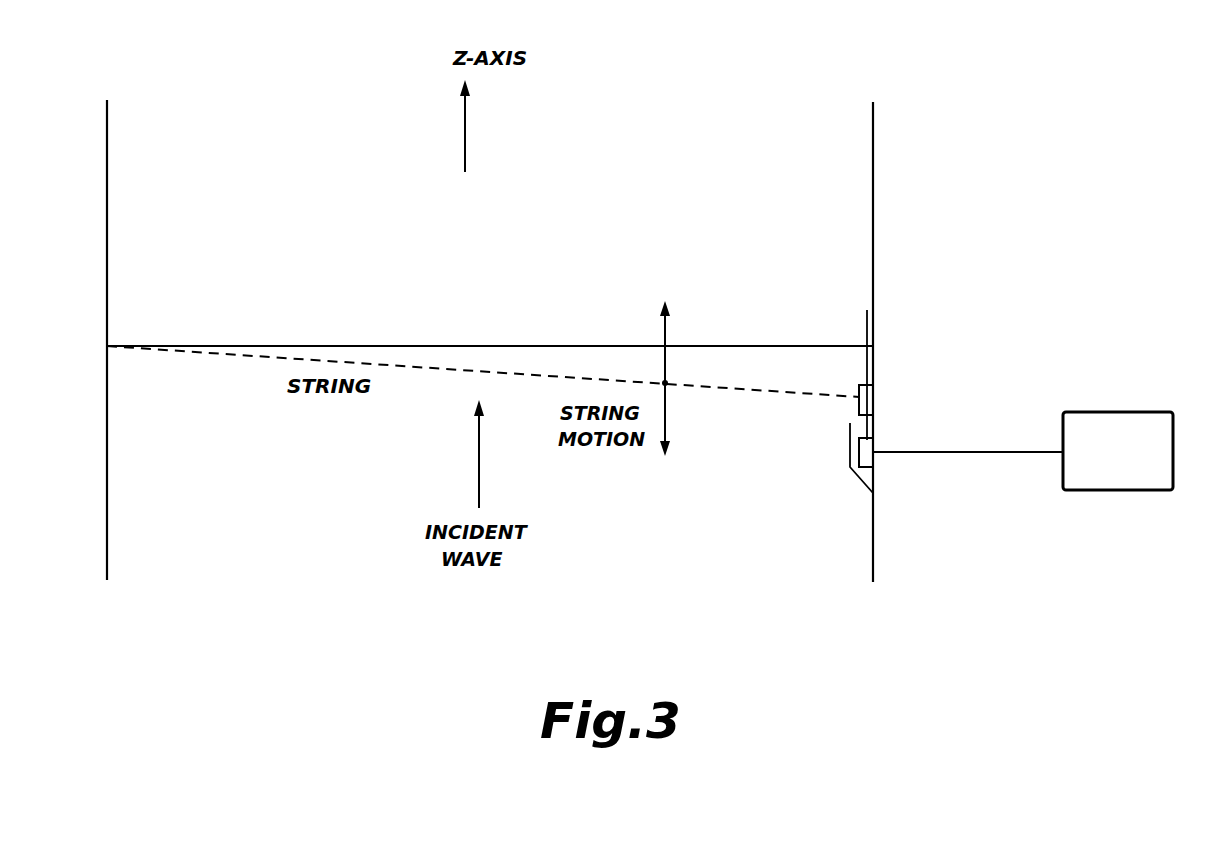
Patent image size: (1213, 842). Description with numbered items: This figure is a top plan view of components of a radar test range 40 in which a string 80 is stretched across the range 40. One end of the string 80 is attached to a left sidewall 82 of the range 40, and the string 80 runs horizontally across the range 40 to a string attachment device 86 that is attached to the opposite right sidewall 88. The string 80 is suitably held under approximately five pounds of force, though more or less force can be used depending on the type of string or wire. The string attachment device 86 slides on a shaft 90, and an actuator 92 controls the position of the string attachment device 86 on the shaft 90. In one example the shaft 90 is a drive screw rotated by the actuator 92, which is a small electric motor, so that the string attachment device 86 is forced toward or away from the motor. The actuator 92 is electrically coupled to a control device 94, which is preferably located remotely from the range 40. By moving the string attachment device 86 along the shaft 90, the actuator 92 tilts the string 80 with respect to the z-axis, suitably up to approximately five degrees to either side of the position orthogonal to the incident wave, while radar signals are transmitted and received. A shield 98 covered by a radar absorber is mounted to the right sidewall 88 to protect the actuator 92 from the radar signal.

The range 40 is at (196, 86).
The string 80 is at (516, 344).
The left sidewall 82 is at (107, 487).
The string attachment device 86 is at (876, 398).
The right sidewall 88 is at (873, 133).
The shaft 90 is at (866, 329).
The actuator 92 is at (874, 458).
The control device 94 is at (1137, 412).
The shield 98 is at (850, 468).